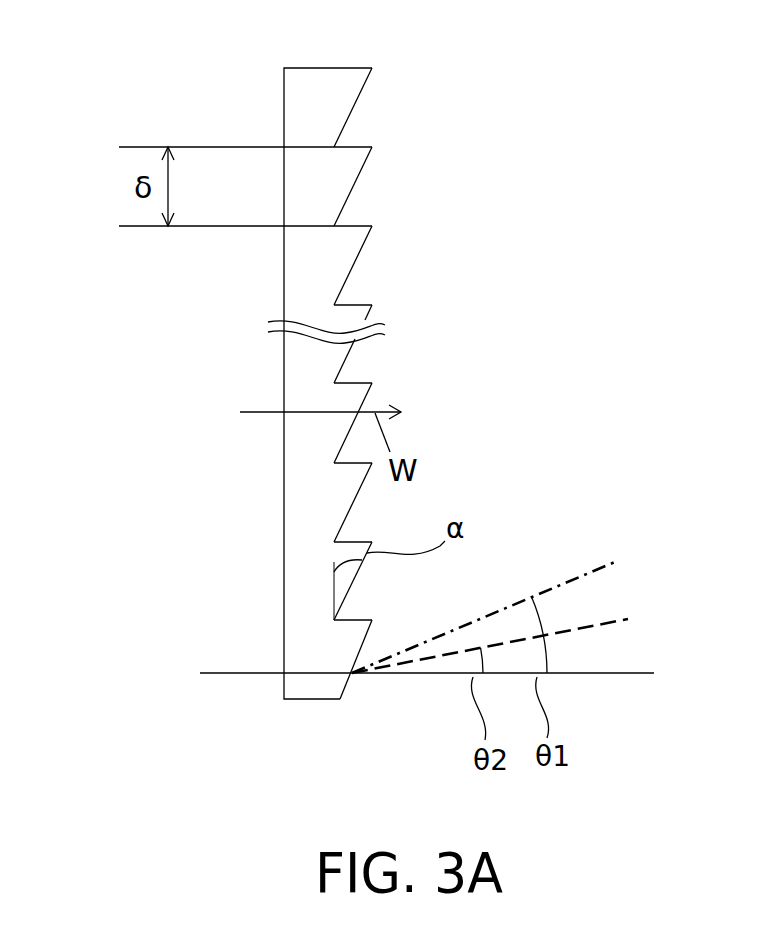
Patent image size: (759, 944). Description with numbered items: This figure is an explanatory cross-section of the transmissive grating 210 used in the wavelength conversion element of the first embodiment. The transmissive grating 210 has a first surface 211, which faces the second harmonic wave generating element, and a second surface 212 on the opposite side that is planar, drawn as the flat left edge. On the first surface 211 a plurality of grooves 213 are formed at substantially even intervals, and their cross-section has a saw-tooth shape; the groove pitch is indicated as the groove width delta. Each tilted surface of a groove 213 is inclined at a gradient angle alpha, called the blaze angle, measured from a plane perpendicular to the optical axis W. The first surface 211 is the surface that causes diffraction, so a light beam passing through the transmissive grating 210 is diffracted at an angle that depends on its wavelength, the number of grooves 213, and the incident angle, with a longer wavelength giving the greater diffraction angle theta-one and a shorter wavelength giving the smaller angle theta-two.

The transmissive grating 210 is at (175, 69).
The first surface 211 is at (403, 328).
The second surface 212 is at (230, 388).
The grooves 213 is at (382, 513).